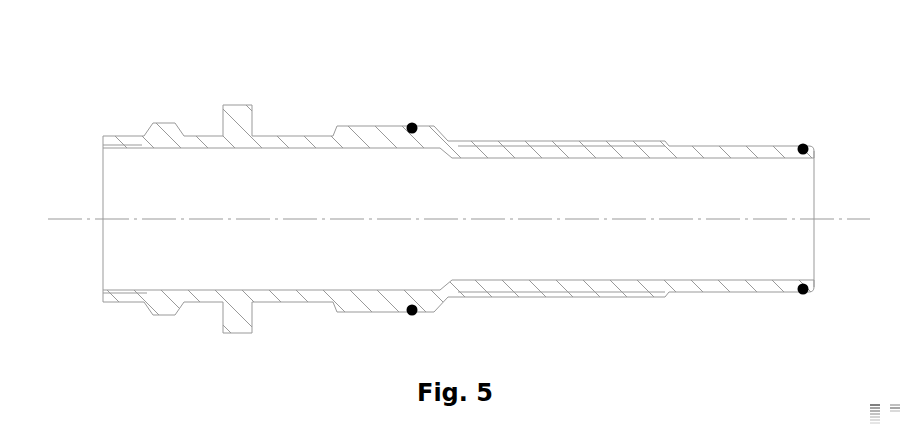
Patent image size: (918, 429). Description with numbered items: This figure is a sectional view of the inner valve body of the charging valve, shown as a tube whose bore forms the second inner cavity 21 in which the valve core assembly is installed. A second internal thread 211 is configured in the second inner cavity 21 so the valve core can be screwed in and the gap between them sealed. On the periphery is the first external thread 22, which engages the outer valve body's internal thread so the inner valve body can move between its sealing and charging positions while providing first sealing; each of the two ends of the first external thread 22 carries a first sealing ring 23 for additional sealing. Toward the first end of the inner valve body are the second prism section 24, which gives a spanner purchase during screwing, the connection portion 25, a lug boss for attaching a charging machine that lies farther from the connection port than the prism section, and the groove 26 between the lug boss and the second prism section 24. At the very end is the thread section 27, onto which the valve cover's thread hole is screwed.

The second inner cavity 21 is at (733, 168).
The second internal thread 211 is at (611, 158).
The first external thread 22 is at (513, 141).
The first sealing ring 23 is at (412, 123).
The second prism section 24 is at (239, 117).
The connection portion 25 is at (165, 137).
The groove 26 is at (205, 130).
The thread section 27 is at (106, 146).